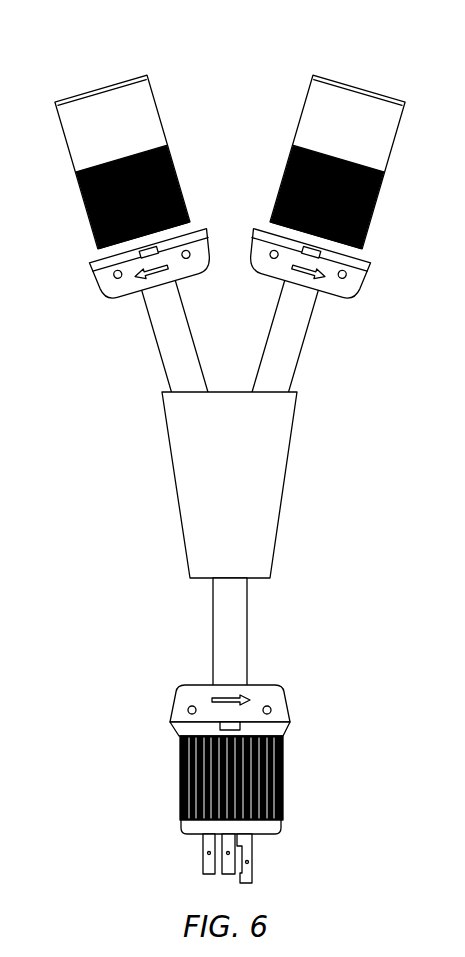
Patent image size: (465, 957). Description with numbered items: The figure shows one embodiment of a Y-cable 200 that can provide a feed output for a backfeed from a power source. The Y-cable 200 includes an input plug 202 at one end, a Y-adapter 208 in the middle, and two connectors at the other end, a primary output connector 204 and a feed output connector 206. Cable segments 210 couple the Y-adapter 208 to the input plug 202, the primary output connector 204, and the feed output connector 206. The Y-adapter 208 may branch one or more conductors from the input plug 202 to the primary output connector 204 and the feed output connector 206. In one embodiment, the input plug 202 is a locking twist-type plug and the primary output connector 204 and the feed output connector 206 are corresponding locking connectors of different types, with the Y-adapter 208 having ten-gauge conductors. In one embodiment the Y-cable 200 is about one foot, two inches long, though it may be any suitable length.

The Y-cable 200 is at (355, 62).
The input plug 202 is at (282, 778).
The primary output connector 204 is at (80, 203).
The feed output connector 206 is at (378, 217).
The Y-adapter 208 is at (282, 482).
The cable segments 210 is at (243, 630).